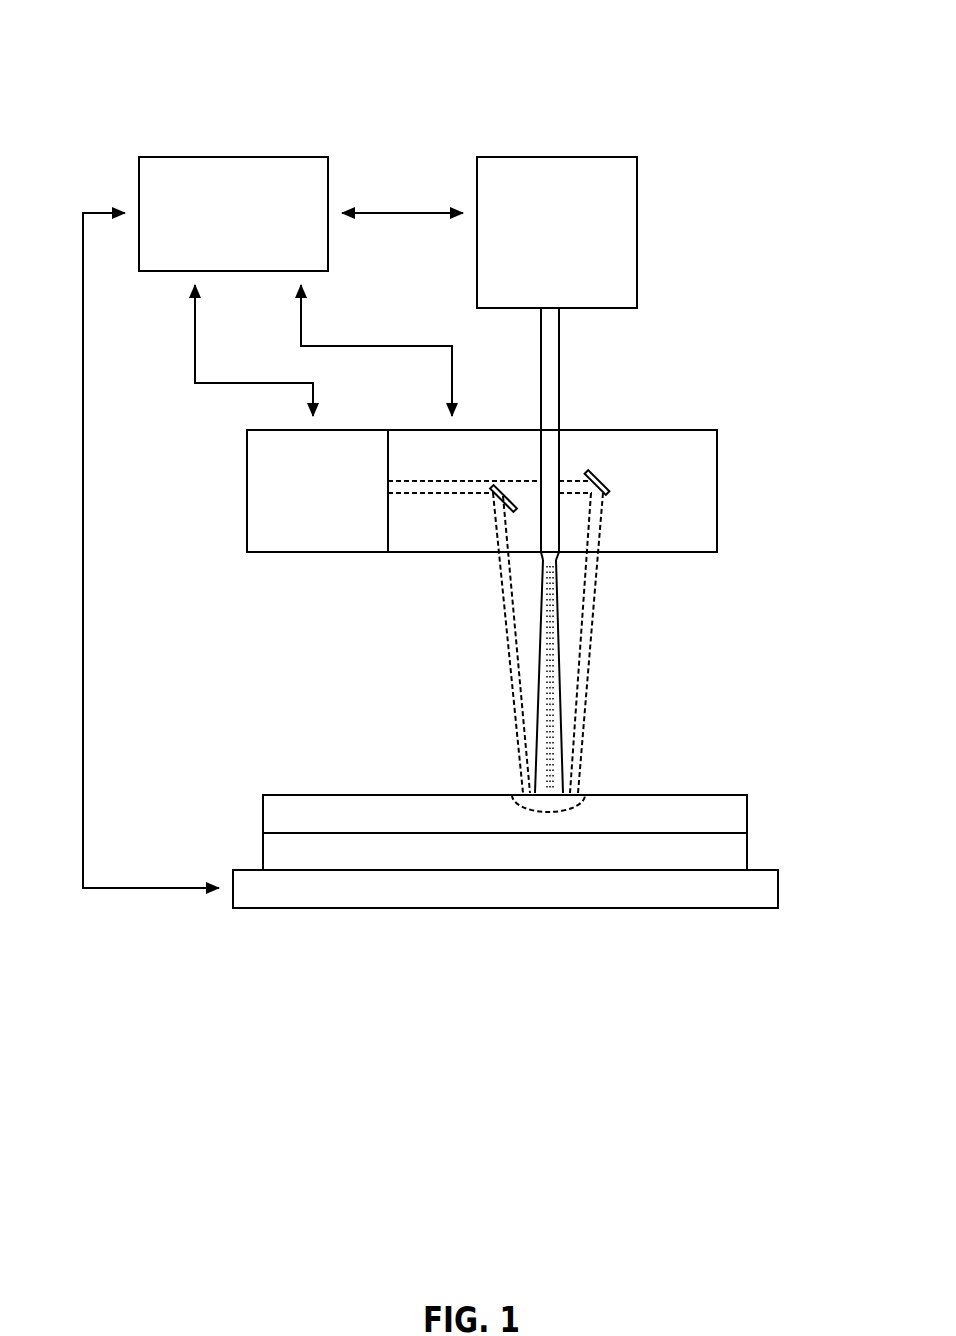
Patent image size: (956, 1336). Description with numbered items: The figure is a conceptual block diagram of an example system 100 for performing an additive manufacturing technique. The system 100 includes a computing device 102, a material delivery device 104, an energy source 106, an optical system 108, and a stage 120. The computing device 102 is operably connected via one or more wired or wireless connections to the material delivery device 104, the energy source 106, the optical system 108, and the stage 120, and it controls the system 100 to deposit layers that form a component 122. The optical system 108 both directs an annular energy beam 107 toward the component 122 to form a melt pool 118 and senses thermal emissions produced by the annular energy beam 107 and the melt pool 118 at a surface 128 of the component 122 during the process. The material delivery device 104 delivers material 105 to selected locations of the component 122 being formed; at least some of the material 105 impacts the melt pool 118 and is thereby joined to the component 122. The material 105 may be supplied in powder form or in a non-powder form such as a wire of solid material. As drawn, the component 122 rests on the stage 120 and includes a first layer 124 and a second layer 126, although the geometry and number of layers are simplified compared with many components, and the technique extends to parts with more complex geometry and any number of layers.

The system 100 is at (100, 52).
The computing device 102 is at (255, 256).
The material delivery device 104 is at (580, 289).
The material 105 is at (556, 632).
The energy source 106 is at (340, 534).
The annular energy beam 107 is at (502, 632).
The optical system 108 is at (680, 519).
The melt pool 118 is at (590, 790).
The stage 120 is at (778, 872).
The component 122 is at (250, 790).
The first layer 124 is at (747, 849).
The second layer 126 is at (747, 797).
The surface 128 is at (695, 795).